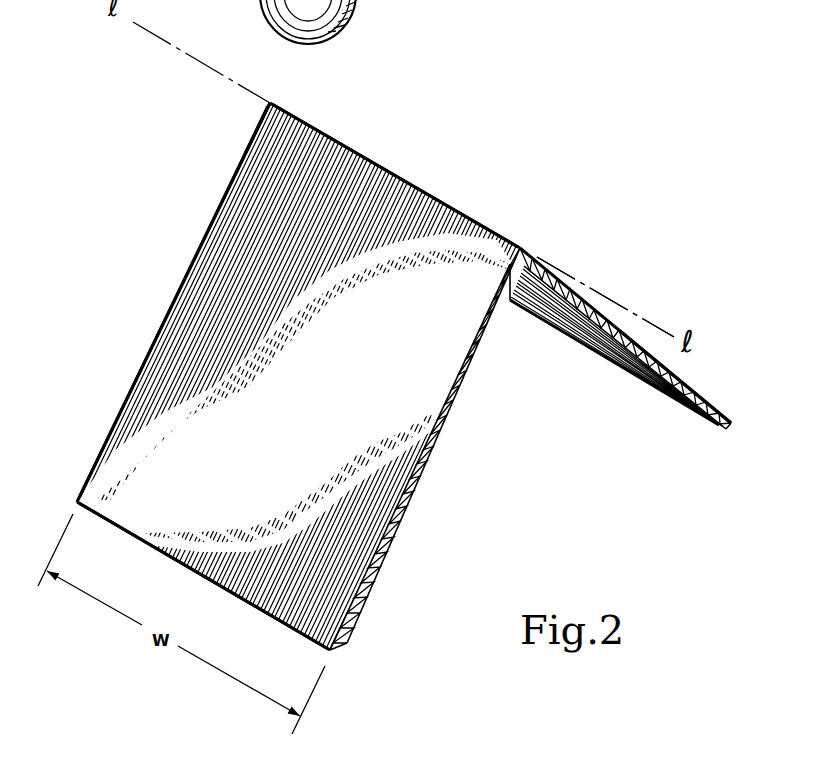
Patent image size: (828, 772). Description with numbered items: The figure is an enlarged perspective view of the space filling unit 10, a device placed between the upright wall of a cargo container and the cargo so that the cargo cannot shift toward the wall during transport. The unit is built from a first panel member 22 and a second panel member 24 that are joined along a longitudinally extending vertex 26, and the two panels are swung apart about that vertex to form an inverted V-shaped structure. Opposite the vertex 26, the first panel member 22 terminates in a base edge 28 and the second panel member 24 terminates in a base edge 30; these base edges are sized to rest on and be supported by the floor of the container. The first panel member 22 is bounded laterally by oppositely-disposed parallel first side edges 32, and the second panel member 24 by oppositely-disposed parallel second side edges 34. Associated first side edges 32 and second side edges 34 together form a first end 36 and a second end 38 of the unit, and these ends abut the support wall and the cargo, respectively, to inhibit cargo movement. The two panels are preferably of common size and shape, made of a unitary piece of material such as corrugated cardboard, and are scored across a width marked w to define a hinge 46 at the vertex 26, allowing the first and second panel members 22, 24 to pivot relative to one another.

The space filling unit 10 is at (598, 205).
The first panel member 22 is at (185, 359).
The second panel member 24 is at (581, 333).
The longitudinally extending vertex 26 is at (377, 157).
The base edge 28 is at (165, 558).
The base edge 30 is at (694, 413).
The first side edges 32 is at (197, 250).
The second side edges 34 is at (698, 387).
The first end 36 is at (440, 456).
The second end 38 is at (247, 140).
The hinge 46 is at (441, 200).